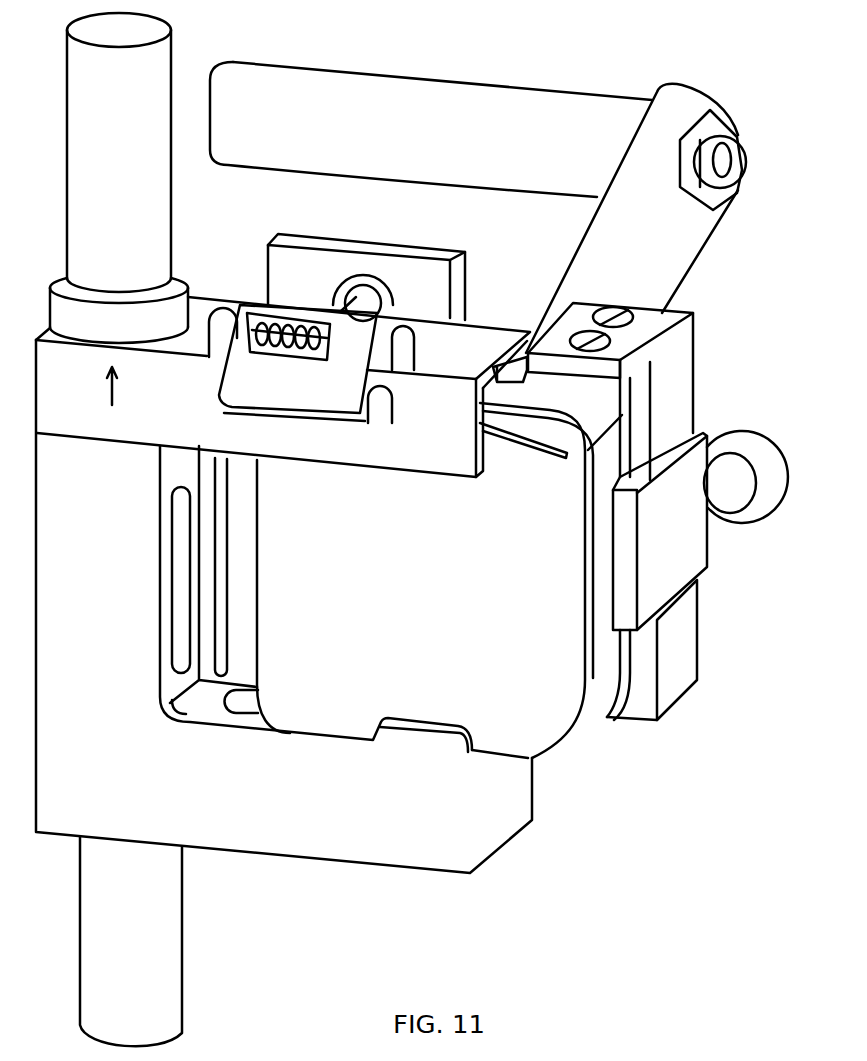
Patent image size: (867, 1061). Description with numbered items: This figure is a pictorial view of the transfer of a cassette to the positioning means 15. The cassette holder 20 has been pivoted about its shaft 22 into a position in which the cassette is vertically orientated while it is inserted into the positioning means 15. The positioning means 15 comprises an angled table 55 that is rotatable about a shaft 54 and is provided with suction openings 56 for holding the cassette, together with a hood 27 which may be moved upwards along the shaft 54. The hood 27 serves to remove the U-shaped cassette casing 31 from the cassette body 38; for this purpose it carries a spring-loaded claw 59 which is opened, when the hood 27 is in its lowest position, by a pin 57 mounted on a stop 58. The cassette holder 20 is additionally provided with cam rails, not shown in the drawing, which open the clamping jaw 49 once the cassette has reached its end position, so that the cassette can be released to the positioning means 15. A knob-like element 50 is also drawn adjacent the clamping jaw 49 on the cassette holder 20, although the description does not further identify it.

The positioning means 15 is at (520, 850).
The cassette holder 20 is at (692, 653).
The shaft 22 is at (273, 77).
The hood 27 is at (200, 410).
The cassette casing 31 is at (557, 743).
The cassette body 38 is at (610, 687).
The clamping jaw 49 is at (692, 560).
The knob 50 is at (745, 437).
The shaft 54 is at (165, 50).
The angled table 55 is at (265, 830).
The suction openings 56 is at (180, 620).
The pin 57 is at (353, 297).
The stop 58 is at (377, 283).
The spring-loaded claw 59 is at (374, 423).